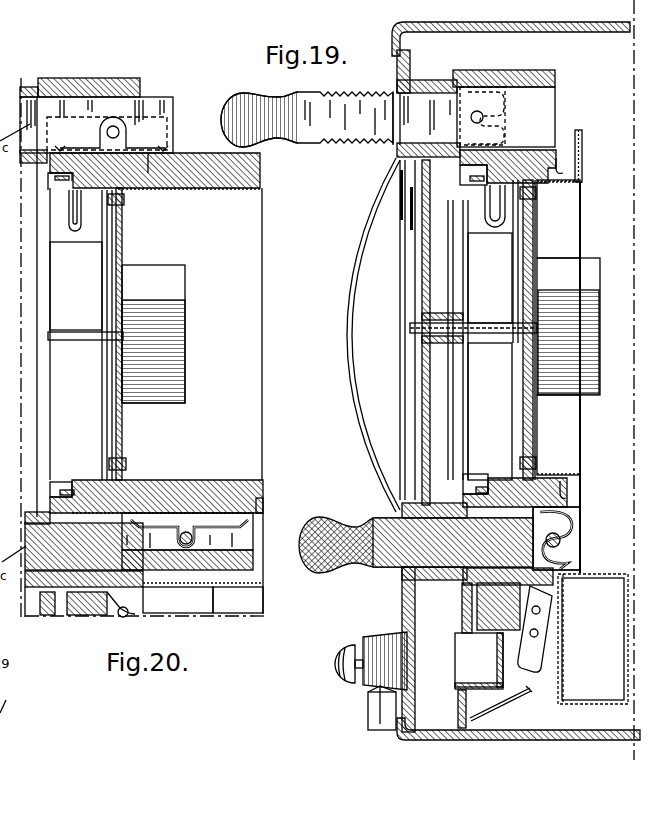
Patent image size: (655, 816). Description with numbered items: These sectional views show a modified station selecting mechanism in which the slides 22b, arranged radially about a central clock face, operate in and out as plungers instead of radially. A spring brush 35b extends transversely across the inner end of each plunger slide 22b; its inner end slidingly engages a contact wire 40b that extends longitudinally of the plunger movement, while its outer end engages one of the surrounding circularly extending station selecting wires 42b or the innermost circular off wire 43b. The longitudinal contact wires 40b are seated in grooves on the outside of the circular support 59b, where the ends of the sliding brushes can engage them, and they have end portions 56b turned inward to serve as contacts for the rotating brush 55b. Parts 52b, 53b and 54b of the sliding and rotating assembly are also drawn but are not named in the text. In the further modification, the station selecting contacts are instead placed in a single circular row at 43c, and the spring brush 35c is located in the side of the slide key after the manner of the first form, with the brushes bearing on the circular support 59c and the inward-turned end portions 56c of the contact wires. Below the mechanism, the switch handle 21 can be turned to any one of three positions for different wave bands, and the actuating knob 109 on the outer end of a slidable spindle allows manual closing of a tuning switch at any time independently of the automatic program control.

In FIG. 20, the spring brush 35c is at (130, 144).
In FIG. 20, the circular support 59c is at (208, 189).
In FIG. 20, the end portion of contact wire 56c is at (59, 481).
In FIG. 20, the armature column 52b is at (76, 286).
In FIG. 19, the armature column 52b is at (490, 278).
In FIG. 20, the station selecting contact ring 43c is at (263, 507).
In FIG. 19, the spring brush 35b is at (504, 100).
In FIG. 19, the circular support 59b is at (518, 160).
In FIG. 19, the end portion of contact wire 56b is at (460, 175).
In FIG. 19, the rotating brush 55b is at (473, 203).
In FIG. 19, the hairpin spring 53b is at (500, 230).
In FIG. 19, the lower column 54b is at (505, 360).
In FIG. 19, the plunger slide 22b is at (307, 133).
In FIG. 19, the contact wire 40b is at (566, 509).
In FIG. 19, the station selecting wire 42b is at (467, 590).
In FIG. 19, the off wire 43b is at (553, 588).
In FIG. 19, the actuating knob 109 is at (351, 645).
In FIG. 19, the switch handle 21 is at (370, 716).